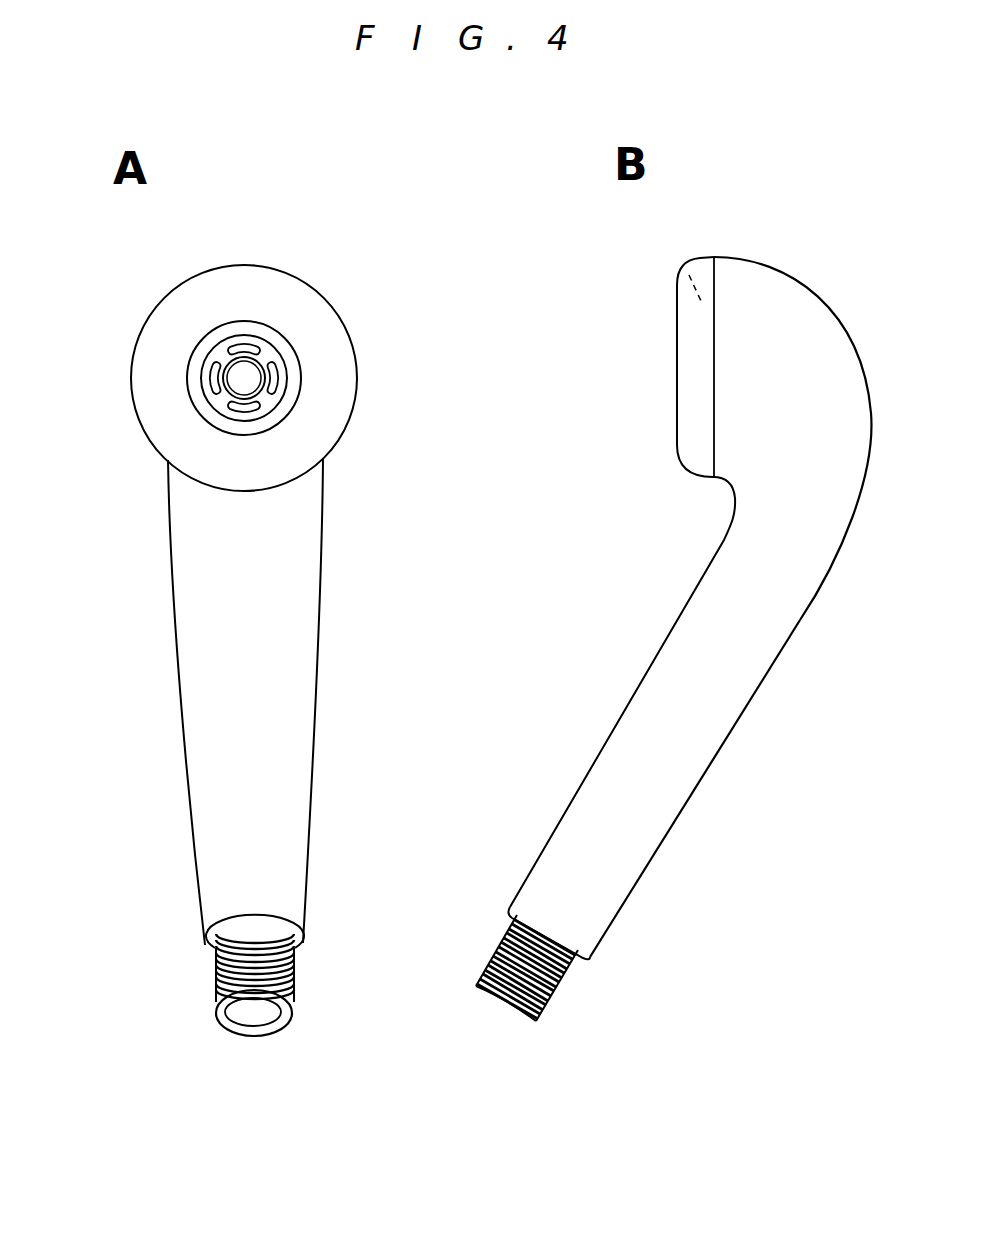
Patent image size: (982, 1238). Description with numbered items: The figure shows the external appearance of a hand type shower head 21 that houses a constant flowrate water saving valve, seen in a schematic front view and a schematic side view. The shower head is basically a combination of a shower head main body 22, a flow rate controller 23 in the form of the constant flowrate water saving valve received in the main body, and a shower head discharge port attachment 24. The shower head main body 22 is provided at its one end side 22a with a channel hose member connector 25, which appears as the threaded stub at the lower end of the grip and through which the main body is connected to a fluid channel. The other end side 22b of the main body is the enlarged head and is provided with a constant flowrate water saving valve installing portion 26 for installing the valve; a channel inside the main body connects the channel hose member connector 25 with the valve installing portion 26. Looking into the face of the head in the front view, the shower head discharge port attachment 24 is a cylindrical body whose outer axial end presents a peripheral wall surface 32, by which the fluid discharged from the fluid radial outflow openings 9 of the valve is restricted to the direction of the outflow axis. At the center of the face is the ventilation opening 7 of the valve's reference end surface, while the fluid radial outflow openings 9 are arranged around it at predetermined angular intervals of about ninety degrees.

In FIG. 4A, the ventilation opening 7 is at (262, 367).
In FIG. 4A, the fluid radial outflow openings 9 is at (282, 371).
In FIG. 4A, the shower head 21 is at (76, 350).
In FIG. 4B, the shower head 21 is at (742, 719).
In FIG. 4A, the shower head main body 22 is at (172, 543).
In FIG. 4B, the shower head main body 22 is at (636, 680).
In FIG. 4A, the one end side 22a is at (205, 923).
In FIG. 4B, the one end side 22a is at (610, 927).
In FIG. 4A, the other end side 22b is at (156, 311).
In FIG. 4B, the other end side 22b is at (775, 268).
In FIG. 4A, the flow rate controller 23 is at (205, 403).
In FIG. 4A, the shower head discharge port attachment 24 is at (146, 363).
In FIG. 4B, the shower head discharge port attachment 24 is at (674, 370).
In FIG. 4A, the channel hose member connector 25 is at (215, 990).
In FIG. 4B, the channel hose member connector 25 is at (558, 990).
In FIG. 4A, the constant flowrate water saving valve installing portion 26 is at (227, 323).
In FIG. 4B, the constant flowrate water saving valve installing portion 26 is at (685, 278).
In FIG. 4A, the peripheral wall surface 32 is at (287, 407).